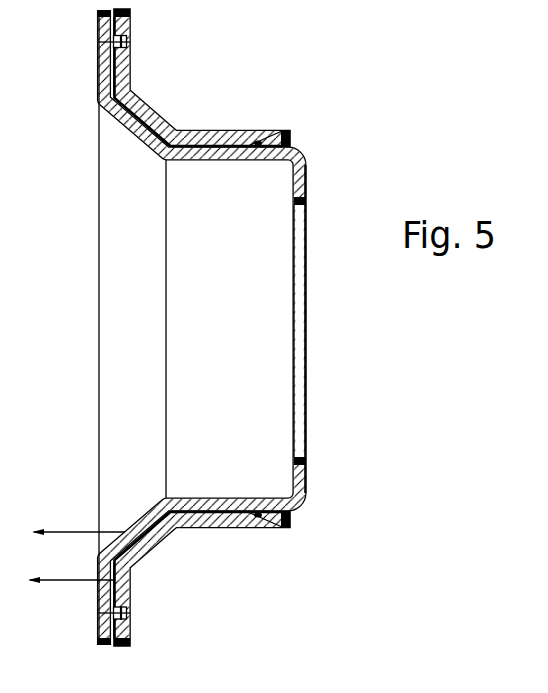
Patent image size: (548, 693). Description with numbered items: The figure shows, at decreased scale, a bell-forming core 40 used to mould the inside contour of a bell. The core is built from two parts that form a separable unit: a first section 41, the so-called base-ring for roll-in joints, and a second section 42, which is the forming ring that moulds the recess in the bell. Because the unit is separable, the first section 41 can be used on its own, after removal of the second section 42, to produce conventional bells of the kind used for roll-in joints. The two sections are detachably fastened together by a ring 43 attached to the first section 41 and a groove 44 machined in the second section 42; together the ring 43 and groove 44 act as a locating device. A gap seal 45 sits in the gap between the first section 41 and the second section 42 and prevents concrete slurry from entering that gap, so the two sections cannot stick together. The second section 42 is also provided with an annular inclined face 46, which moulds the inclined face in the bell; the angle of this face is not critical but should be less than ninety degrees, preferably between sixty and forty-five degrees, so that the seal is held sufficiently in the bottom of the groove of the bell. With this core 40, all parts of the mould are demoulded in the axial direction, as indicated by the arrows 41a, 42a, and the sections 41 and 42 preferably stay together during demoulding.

The bell-forming core 40 is at (312, 359).
The first section 41 is at (101, 132).
The arrow 41a is at (78, 521).
The second section 42 is at (152, 116).
The arrow 42a is at (70, 569).
The ring 43 is at (110, 42).
The groove 44 is at (124, 41).
The gap seal 45 is at (258, 144).
The annular inclined face 46 is at (281, 148).